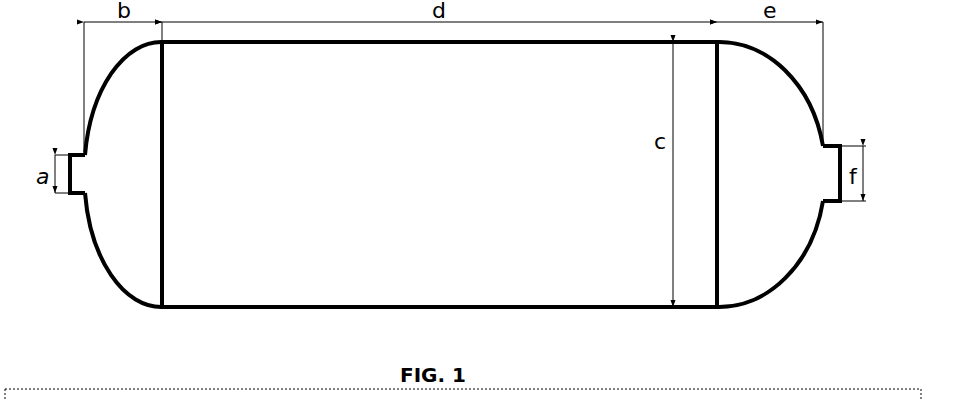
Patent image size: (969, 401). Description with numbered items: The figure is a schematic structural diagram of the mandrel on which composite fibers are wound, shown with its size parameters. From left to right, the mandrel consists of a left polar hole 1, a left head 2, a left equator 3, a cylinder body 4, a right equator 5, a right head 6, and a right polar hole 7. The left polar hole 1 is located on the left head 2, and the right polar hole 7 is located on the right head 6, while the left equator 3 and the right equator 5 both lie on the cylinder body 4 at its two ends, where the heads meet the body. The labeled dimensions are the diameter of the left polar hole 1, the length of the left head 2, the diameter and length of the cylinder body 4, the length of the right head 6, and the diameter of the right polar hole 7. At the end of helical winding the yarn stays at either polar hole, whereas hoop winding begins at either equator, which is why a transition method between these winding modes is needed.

The left polar hole 1 is at (80, 197).
The left head 2 is at (130, 137).
The left equator 3 is at (160, 218).
The cylinder body 4 is at (418, 107).
The right equator 5 is at (722, 240).
The right head 6 is at (748, 100).
The right polar hole 7 is at (832, 193).